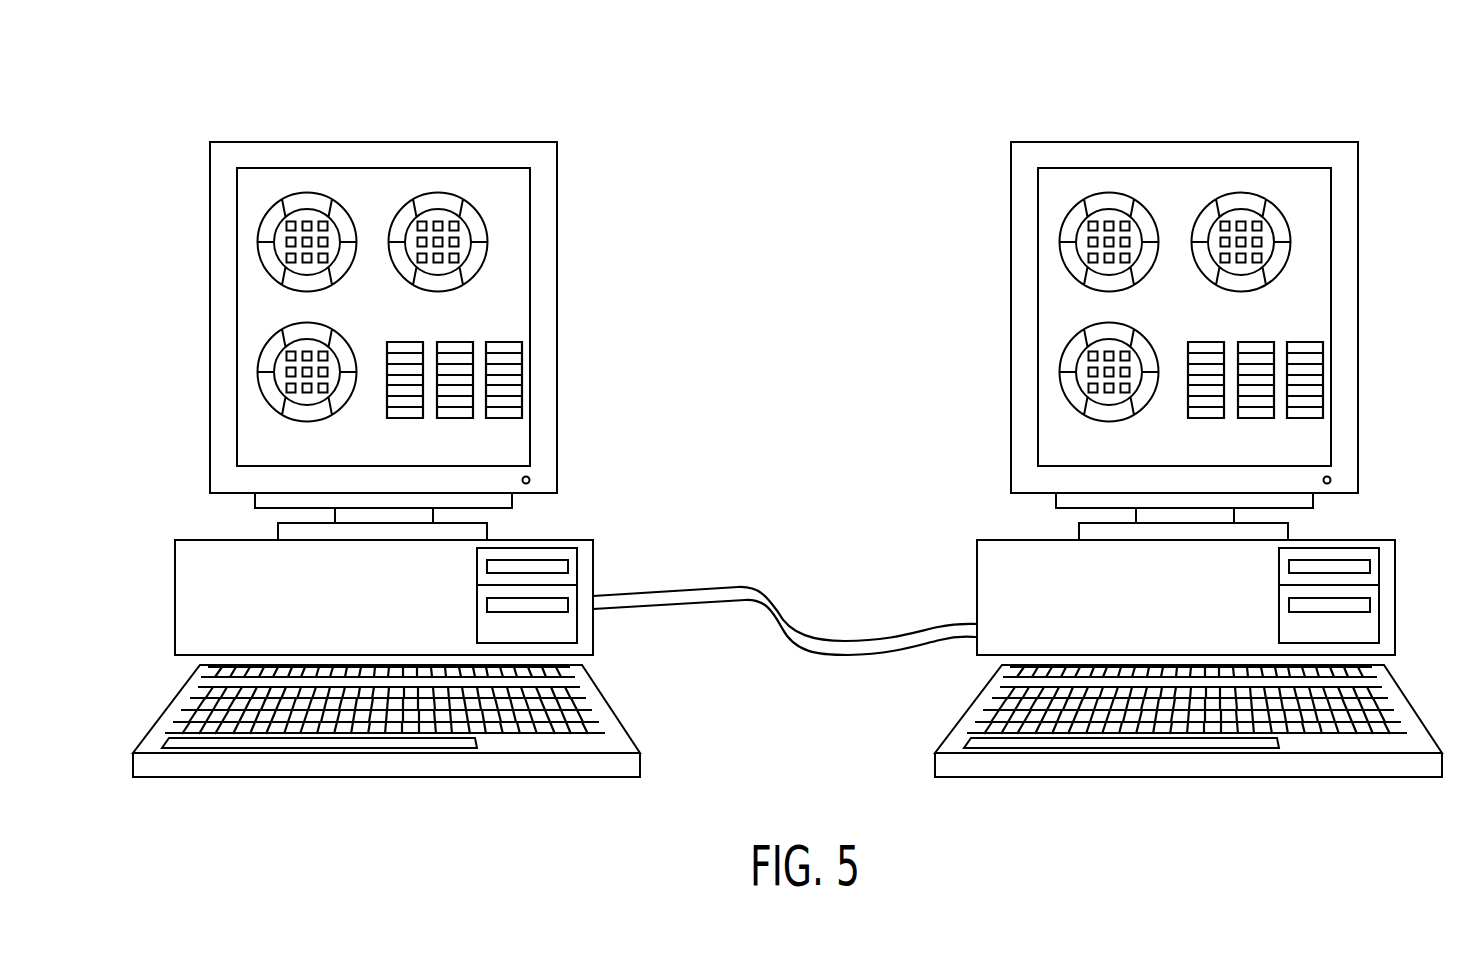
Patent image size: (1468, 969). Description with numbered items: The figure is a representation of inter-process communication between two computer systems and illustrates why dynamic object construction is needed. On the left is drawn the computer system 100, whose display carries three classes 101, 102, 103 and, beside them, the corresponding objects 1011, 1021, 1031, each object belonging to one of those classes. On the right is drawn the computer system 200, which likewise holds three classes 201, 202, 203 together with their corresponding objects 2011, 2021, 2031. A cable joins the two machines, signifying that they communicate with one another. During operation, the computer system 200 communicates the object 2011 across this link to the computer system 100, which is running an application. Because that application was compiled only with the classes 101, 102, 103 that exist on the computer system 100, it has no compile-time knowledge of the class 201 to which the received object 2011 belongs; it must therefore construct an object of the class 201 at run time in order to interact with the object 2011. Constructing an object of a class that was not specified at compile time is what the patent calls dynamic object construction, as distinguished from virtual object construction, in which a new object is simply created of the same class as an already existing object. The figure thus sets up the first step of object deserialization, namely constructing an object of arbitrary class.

The computer system 100 is at (313, 142).
The class 101 is at (260, 242).
The class 102 is at (488, 242).
The class 103 is at (260, 372).
The object 1011 is at (411, 342).
The object 1021 is at (453, 418).
The object 1031 is at (511, 418).
The computer system 200 is at (1184, 308).
The class 201 is at (1052, 237).
The class 202 is at (1316, 241).
The class 203 is at (1052, 364).
The object 2011 is at (1324, 356).
The object 2021 is at (1352, 412).
The object 2031 is at (1374, 391).